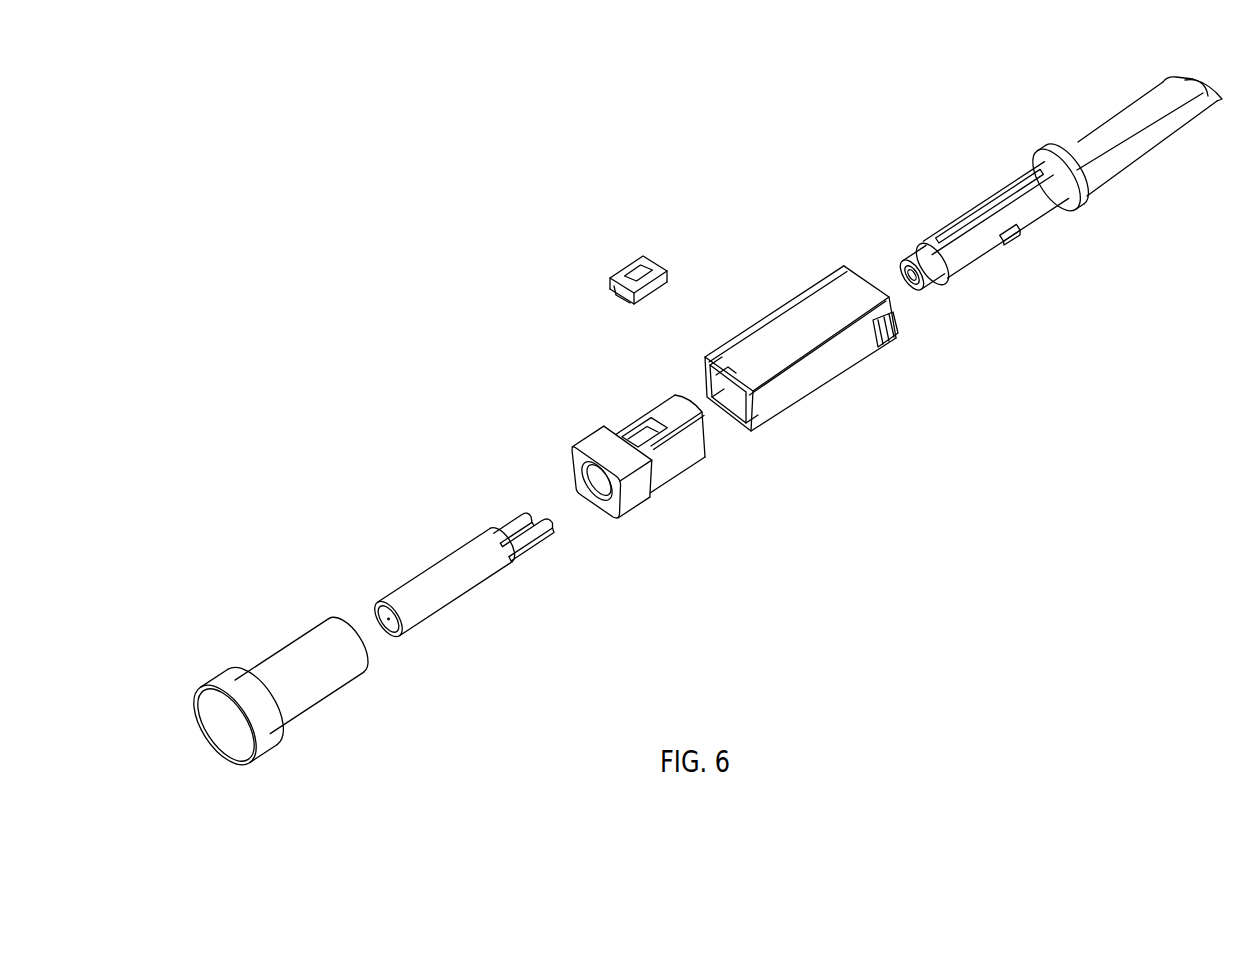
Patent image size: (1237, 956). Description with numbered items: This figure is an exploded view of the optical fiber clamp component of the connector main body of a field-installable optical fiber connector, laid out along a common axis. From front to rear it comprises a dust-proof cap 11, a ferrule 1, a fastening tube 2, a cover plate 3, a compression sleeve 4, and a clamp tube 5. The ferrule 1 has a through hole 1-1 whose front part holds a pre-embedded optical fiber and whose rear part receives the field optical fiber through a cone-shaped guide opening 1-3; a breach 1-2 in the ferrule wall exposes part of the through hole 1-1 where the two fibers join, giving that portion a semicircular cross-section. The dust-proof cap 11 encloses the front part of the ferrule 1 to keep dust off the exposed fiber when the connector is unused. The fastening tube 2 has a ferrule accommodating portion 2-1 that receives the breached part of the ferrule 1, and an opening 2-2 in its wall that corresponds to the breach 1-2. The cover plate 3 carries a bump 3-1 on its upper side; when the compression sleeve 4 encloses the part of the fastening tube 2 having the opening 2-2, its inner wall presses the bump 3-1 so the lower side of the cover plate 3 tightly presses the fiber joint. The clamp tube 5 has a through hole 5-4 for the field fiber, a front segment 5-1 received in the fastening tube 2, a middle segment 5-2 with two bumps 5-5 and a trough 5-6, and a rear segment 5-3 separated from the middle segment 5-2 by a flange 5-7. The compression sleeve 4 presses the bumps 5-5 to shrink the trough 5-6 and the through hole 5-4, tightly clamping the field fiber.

The dust-proof cap 11 is at (333, 705).
The ferrule 1 is at (472, 563).
The through hole 1-1 is at (517, 540).
The breach 1-2 is at (510, 522).
The guide opening 1-3 is at (535, 520).
The fastening tube 2 is at (668, 474).
The ferrule accommodating portion 2-1 is at (603, 485).
The opening 2-2 is at (635, 432).
The cover plate 3 is at (622, 239).
The bump 3-1 is at (637, 270).
The compression sleeve 4 is at (842, 388).
The clamp tube 5 is at (1042, 211).
The front segment 5-1 is at (925, 275).
The middle segment 5-2 is at (978, 252).
The rear segment 5-3 is at (1123, 157).
The through hole 5-4 is at (905, 283).
The bumps 5-5 is at (1003, 228).
The trough 5-6 is at (967, 218).
The flange 5-7 is at (1053, 148).